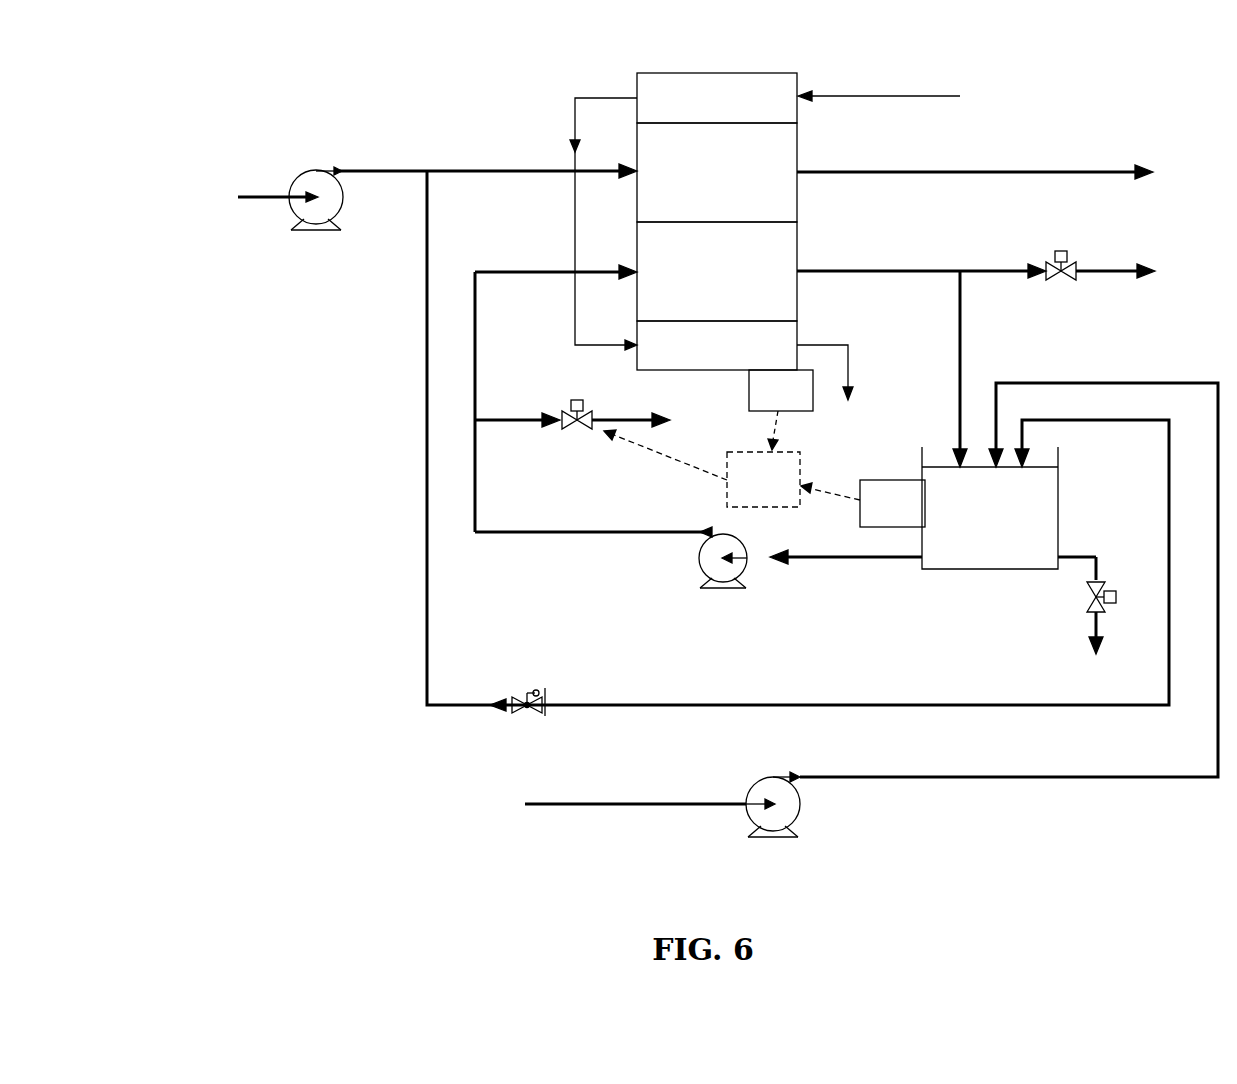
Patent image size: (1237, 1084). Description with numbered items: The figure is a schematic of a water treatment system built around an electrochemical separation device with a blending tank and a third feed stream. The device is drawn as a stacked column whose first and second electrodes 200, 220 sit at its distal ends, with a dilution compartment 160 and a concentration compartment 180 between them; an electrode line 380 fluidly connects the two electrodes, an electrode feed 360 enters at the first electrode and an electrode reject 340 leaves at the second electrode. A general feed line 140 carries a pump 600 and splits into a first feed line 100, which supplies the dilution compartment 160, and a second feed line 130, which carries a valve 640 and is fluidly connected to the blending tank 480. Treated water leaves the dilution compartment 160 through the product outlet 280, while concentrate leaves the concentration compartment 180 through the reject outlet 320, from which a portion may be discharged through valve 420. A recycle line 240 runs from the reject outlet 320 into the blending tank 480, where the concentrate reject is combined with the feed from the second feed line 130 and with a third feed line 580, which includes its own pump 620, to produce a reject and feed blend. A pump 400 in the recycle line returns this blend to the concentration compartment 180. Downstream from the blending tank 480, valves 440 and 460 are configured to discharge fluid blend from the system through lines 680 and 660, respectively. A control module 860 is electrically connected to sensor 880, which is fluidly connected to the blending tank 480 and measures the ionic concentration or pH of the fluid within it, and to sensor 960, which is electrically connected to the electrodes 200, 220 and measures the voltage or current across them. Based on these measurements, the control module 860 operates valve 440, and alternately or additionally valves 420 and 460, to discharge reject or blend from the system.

The first feed line 100 is at (500, 170).
The second feed line 130 is at (426, 375).
The general feed line 140 is at (248, 197).
The dilution compartment 160 is at (717, 172).
The concentration compartment 180 is at (636, 271).
The first electrode 200 is at (717, 98).
The second electrode 220 is at (717, 345).
The recycle line 240 is at (950, 355).
The product outlet 280 is at (1005, 174).
The reject outlet 320 is at (1005, 273).
The electrode reject 340 is at (832, 393).
The electrode feed 360 is at (905, 94).
The electrode line 380 is at (600, 95).
The pump 400 is at (710, 585).
The valve 420 is at (1060, 278).
The valve 440 is at (574, 430).
The valve 460 is at (1090, 593).
The blending tank 480 is at (933, 513).
The third feed line 580 is at (621, 804).
The pump 600 is at (300, 173).
The pump 620 is at (770, 835).
The valve 640 is at (526, 708).
The discharge line 660 is at (1093, 649).
The discharge line 680 is at (599, 404).
The control module 860 is at (702, 468).
The sensor 880 is at (863, 503).
The sensor 960 is at (781, 410).